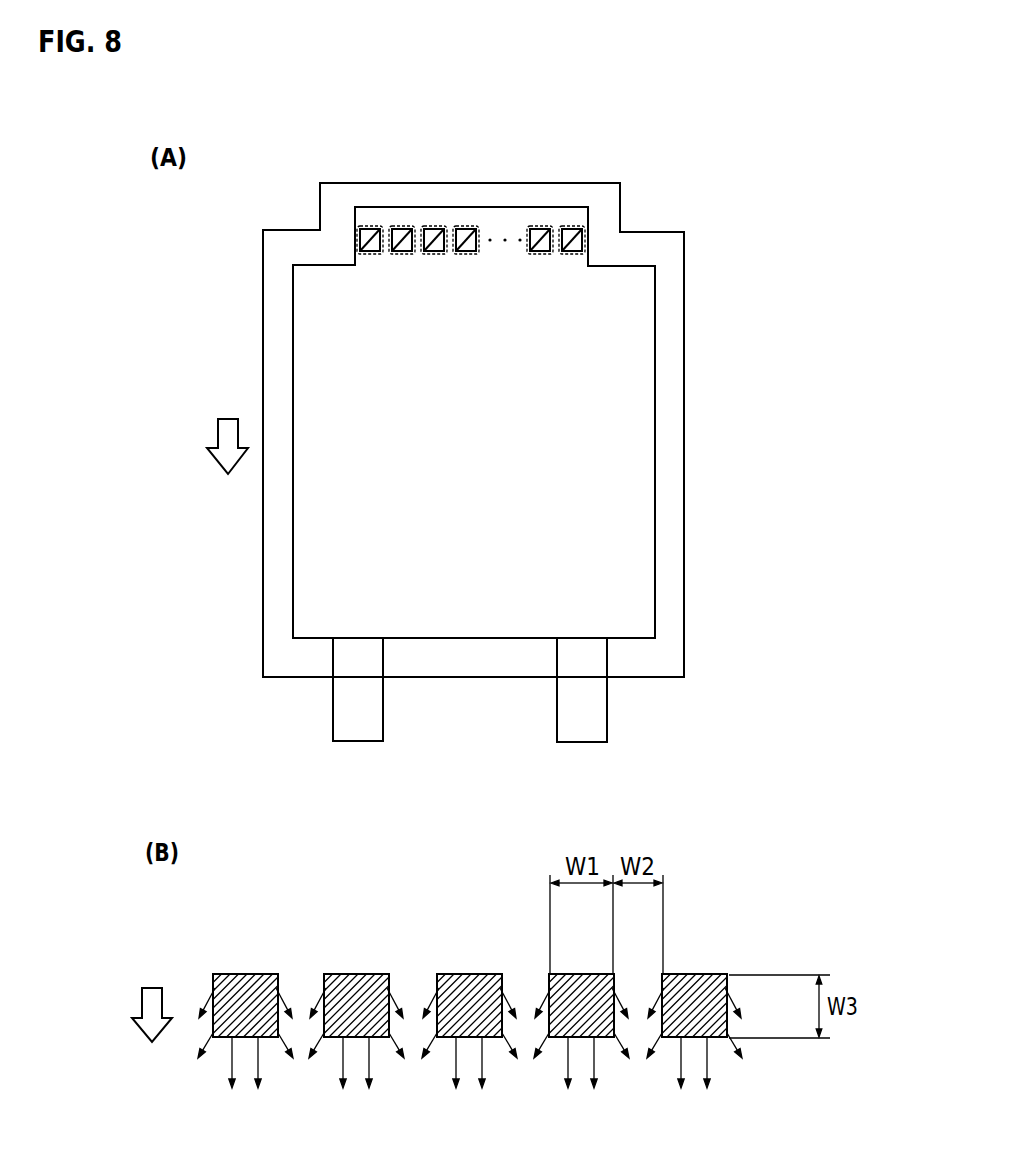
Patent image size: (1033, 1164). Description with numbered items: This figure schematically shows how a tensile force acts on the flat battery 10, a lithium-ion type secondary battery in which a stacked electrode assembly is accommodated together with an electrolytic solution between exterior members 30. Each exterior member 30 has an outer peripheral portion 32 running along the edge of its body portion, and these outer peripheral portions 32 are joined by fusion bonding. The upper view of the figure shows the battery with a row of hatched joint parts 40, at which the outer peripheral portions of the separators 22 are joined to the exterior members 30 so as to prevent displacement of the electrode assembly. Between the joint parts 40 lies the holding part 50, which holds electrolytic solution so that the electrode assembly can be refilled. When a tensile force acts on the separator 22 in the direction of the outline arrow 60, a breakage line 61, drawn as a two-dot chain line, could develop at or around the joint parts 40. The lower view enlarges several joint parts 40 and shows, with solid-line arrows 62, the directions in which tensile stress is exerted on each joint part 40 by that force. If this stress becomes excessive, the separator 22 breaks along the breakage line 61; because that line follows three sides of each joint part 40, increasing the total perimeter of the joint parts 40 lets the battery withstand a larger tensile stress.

The flat battery 10 is at (283, 208).
The separator 22 is at (638, 320).
The exterior member 30 is at (690, 482).
The outer peripheral portion 32 is at (672, 389).
The joint part 40 is at (372, 228).
The holding part 50 is at (449, 255).
The outline arrow 60 is at (217, 430).
The breakage line 61 is at (472, 258).
The solid-line arrows 62 is at (618, 1048).